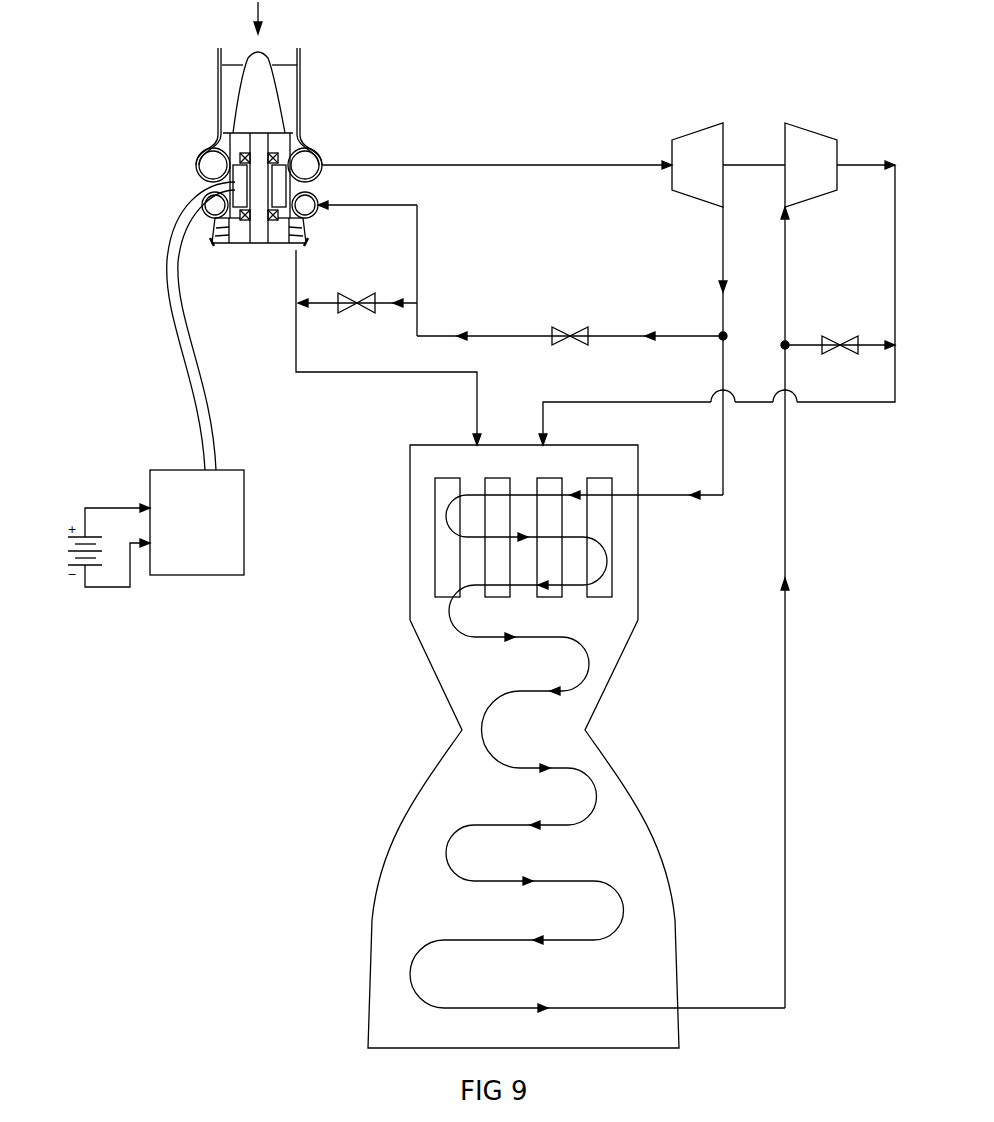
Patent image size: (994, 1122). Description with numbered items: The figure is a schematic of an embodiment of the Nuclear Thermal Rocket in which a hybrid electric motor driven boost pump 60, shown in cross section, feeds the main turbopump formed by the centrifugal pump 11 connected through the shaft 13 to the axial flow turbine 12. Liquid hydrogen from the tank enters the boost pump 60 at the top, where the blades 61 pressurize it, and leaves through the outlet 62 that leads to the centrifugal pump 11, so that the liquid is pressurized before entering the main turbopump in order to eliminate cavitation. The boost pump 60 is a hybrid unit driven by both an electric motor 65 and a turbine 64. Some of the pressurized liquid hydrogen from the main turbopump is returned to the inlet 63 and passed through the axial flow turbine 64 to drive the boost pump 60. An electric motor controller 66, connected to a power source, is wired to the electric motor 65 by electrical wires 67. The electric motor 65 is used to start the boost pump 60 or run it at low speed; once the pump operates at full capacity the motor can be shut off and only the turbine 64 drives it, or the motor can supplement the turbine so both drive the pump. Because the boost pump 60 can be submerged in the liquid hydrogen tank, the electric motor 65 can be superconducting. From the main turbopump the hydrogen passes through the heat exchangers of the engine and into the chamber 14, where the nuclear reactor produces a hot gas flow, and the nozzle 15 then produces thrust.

The centrifugal pump 11 is at (692, 137).
The axial flow turbine 12 is at (806, 137).
The shaft 13 is at (748, 160).
The chamber 14 is at (497, 558).
The nozzle 15 is at (425, 895).
The boost pump 60 is at (330, 89).
The blades 61 is at (230, 85).
The outlet 62 is at (212, 158).
The inlet 63 is at (209, 205).
The turbine 64 is at (240, 240).
The electric motor 65 is at (278, 188).
The electric motor controller 66 is at (173, 493).
The electrical wires 67 is at (188, 343).